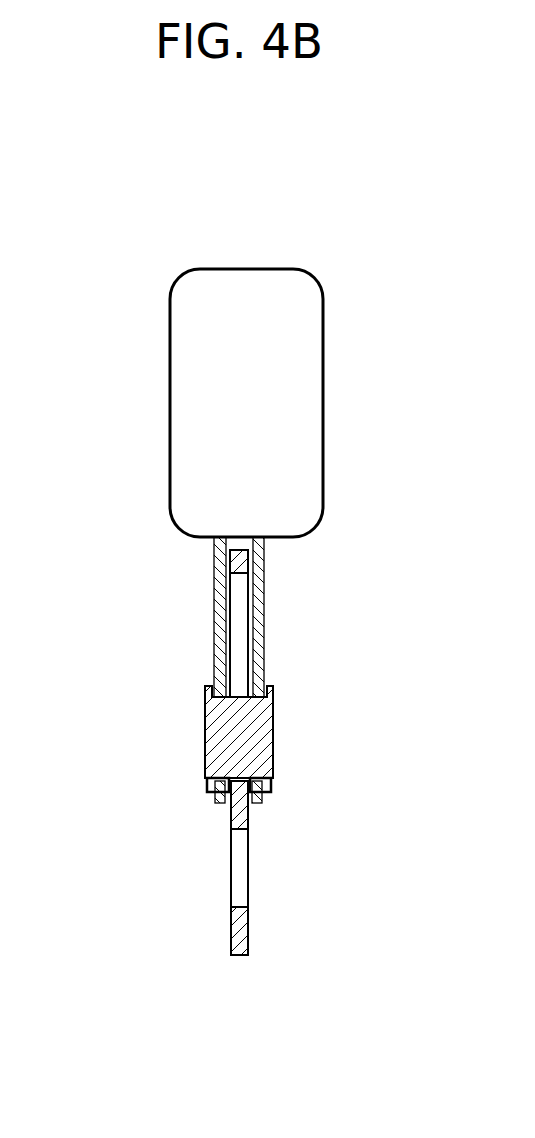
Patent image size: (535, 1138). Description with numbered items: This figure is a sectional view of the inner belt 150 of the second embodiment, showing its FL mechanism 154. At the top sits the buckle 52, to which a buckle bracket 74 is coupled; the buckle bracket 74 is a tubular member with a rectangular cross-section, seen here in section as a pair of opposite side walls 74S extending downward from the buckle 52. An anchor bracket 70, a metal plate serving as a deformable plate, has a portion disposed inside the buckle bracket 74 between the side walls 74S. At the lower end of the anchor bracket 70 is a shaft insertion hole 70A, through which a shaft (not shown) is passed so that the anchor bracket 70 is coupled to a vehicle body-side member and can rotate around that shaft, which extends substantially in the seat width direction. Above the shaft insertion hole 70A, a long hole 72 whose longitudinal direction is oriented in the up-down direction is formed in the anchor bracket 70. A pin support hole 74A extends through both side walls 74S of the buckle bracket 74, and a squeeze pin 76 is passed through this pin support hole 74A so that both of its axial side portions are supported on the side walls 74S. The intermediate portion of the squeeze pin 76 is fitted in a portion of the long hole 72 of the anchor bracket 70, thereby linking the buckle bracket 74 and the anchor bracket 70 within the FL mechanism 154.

The buckle 52 is at (307, 378).
The inner belt 150 is at (127, 382).
The FL mechanism 154 is at (139, 506).
The long hole 72 is at (232, 592).
The buckle bracket 74 is at (268, 568).
The side walls 74S is at (216, 617).
The pin support hole 74A is at (367, 728).
The squeeze pin 76 is at (205, 731).
The anchor bracket 70 is at (246, 812).
The shaft insertion hole 70A is at (241, 897).